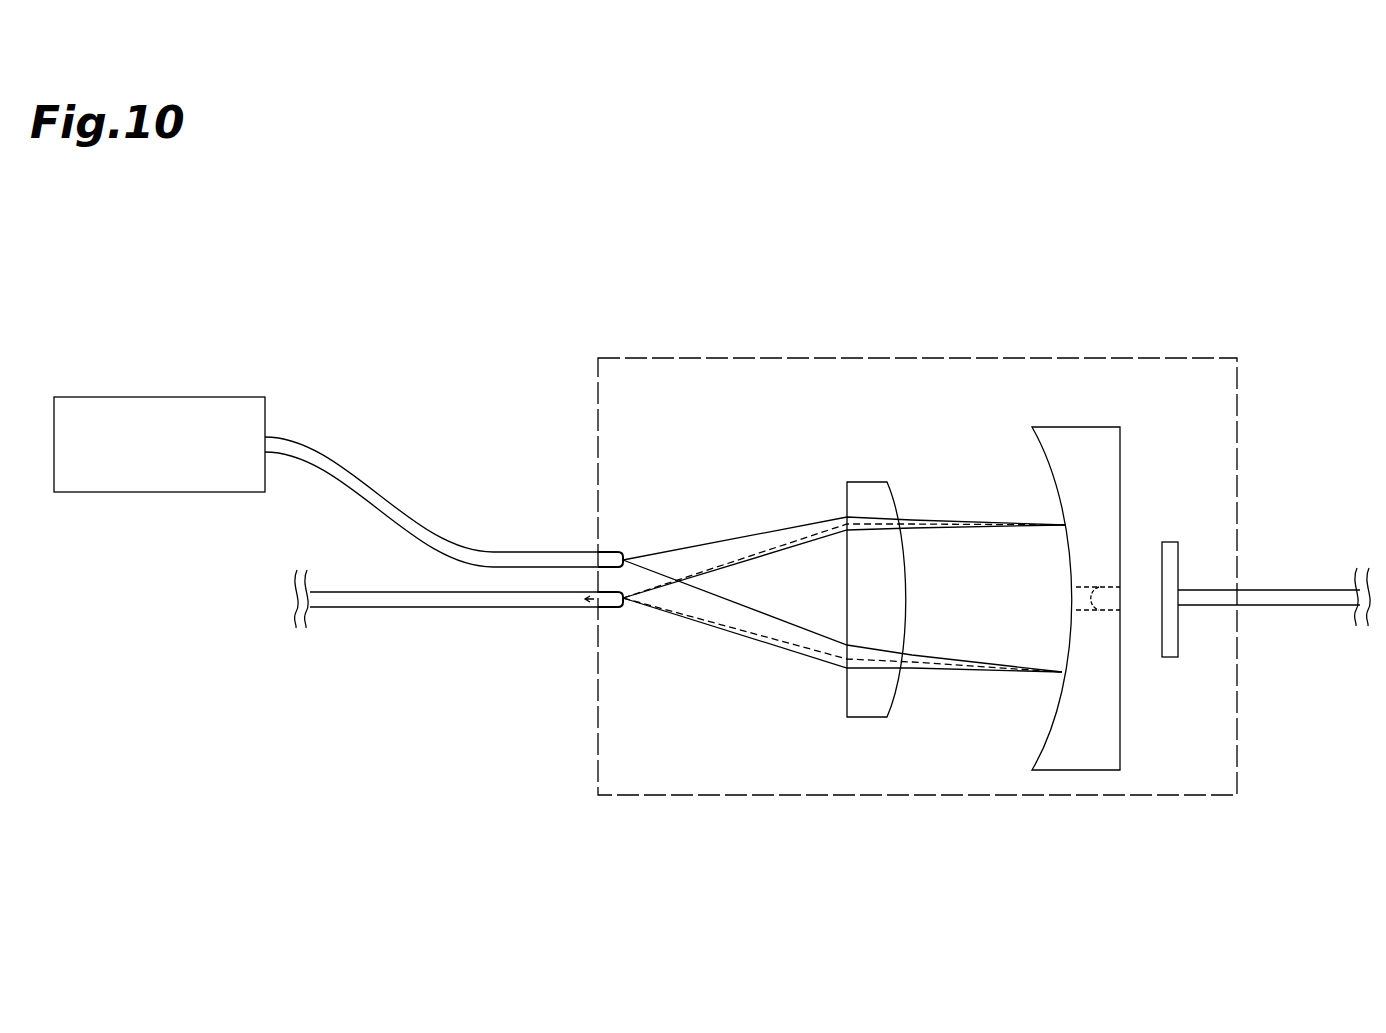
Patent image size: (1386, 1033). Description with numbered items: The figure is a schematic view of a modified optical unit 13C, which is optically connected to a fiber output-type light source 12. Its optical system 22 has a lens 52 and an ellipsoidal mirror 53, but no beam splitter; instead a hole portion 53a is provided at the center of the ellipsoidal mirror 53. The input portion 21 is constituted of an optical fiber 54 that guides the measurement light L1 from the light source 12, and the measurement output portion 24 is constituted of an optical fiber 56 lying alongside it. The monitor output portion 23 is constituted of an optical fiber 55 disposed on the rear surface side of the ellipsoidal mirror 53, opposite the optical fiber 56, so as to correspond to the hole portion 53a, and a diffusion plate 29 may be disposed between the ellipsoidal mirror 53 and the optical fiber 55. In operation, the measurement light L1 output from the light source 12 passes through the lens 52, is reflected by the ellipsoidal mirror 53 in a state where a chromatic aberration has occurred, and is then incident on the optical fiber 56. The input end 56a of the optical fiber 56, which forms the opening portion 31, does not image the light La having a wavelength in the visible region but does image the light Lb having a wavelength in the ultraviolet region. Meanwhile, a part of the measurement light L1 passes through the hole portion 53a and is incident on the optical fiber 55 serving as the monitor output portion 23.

The light source 12 is at (160, 396).
The optical unit 13C is at (577, 316).
The input portion 21 is at (589, 542).
The optical system 22 is at (967, 421).
The monitor output portion 23 is at (1250, 578).
The measurement output portion 24 is at (590, 617).
The diffusion plate 29 is at (1170, 658).
The opening portion 31 is at (655, 642).
The lens 52 is at (864, 481).
The ellipsoidal mirror 53 is at (1083, 440).
The hole portion 53a is at (1090, 590).
The optical fiber 54 is at (510, 551).
The optical fiber 55 is at (1318, 589).
The optical fiber 56 is at (372, 608).
The input end 56a is at (628, 610).
The measurement light L1 is at (727, 501).
The light having a wavelength in the visible region La is at (793, 658).
The light having a wavelength in the ultraviolet region Lb is at (767, 648).